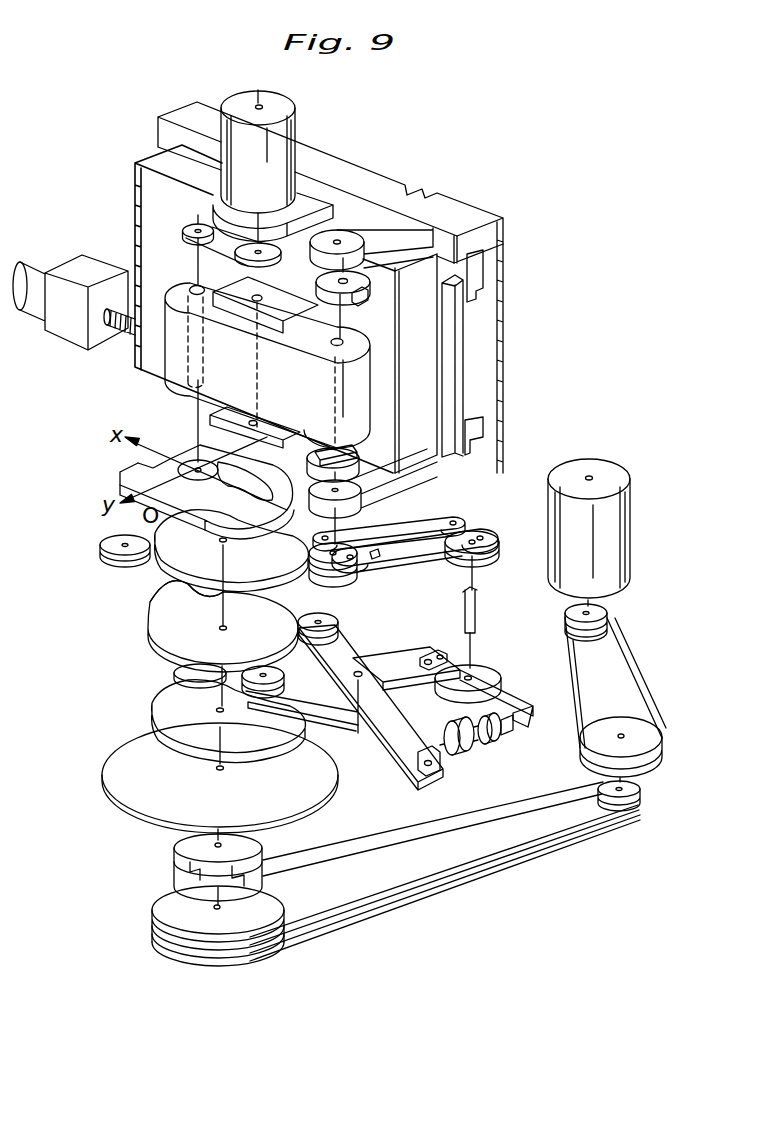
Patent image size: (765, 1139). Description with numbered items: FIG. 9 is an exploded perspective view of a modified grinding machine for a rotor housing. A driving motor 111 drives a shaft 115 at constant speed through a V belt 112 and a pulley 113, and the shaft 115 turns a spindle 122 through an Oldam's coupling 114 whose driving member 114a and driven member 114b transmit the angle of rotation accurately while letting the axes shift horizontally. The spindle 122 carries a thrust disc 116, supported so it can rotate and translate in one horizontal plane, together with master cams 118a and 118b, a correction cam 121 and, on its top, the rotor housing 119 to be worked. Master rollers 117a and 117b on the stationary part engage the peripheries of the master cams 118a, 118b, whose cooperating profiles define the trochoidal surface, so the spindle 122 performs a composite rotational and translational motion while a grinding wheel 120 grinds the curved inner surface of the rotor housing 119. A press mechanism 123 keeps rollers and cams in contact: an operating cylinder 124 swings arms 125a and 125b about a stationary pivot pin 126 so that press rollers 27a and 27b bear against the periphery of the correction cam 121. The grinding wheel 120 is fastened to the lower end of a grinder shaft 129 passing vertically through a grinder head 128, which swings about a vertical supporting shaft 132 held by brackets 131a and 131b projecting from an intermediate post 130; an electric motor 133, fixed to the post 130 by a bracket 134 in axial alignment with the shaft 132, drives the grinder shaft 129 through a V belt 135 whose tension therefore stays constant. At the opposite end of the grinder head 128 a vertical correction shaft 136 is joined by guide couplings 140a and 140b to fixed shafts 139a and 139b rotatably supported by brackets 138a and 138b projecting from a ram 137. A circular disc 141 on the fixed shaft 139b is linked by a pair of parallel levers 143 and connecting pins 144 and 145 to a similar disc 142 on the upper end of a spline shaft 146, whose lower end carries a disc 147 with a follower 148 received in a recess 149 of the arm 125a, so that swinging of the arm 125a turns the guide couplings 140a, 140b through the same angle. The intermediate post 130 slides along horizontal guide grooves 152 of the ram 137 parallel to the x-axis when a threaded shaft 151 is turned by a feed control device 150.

The driving motor 111 is at (617, 459).
The V belt 112 is at (380, 908).
The pulley 113 is at (152, 946).
The Oldam's coupling 114 is at (204, 862).
The driving member 114a is at (176, 872).
The driven member 114b is at (176, 850).
The drive shaft 115 is at (212, 906).
The thrust disc 116 is at (110, 765).
The master roller 117a is at (100, 553).
The master roller 117b is at (174, 677).
The master cam 118a is at (158, 534).
The master cam 118b is at (152, 712).
The rotor housing 119 is at (130, 465).
The grinding wheel 120 is at (198, 466).
The correction cam 121 is at (153, 641).
The spindle 122 is at (150, 600).
The press mechanism 123 is at (437, 774).
The operating cylinder 124 is at (484, 753).
The arm 125a is at (513, 700).
The arm 125b is at (336, 714).
The stationary pivot pin 126 is at (370, 752).
The press roller 27a is at (339, 631).
The press roller 27b is at (282, 680).
The grinder head 128 is at (167, 353).
The grinder shaft 129 is at (196, 405).
The intermediate post 130 is at (321, 287).
The bracket 131a is at (267, 308).
The bracket 131b is at (279, 430).
The supporting shaft 132 is at (260, 367).
The electric motor 133 is at (291, 104).
The bracket 134 is at (318, 201).
The V belt 135 is at (200, 255).
The correction shaft 136 is at (427, 367).
The ram 137 is at (497, 236).
The bracket 138a is at (358, 238).
The bracket 138b is at (398, 492).
The fixed shaft 139a is at (370, 290).
The fixed shaft 139b is at (374, 557).
The guide coupling 140a is at (410, 376).
The guide coupling 140b is at (360, 453).
The circular disc 141 is at (327, 565).
The circular disc 142 is at (490, 548).
The parallel levers 143 is at (413, 548).
The connecting pin 144 is at (357, 556).
The connecting pin 145 is at (462, 525).
The spline shaft 146 is at (476, 591).
The disc 147 is at (499, 678).
The follower 148 is at (448, 662).
The recess 149 is at (429, 650).
The feed control device 150 is at (56, 331).
The threaded shaft 151 is at (120, 308).
The horizontal guide grooves 152 is at (482, 298).